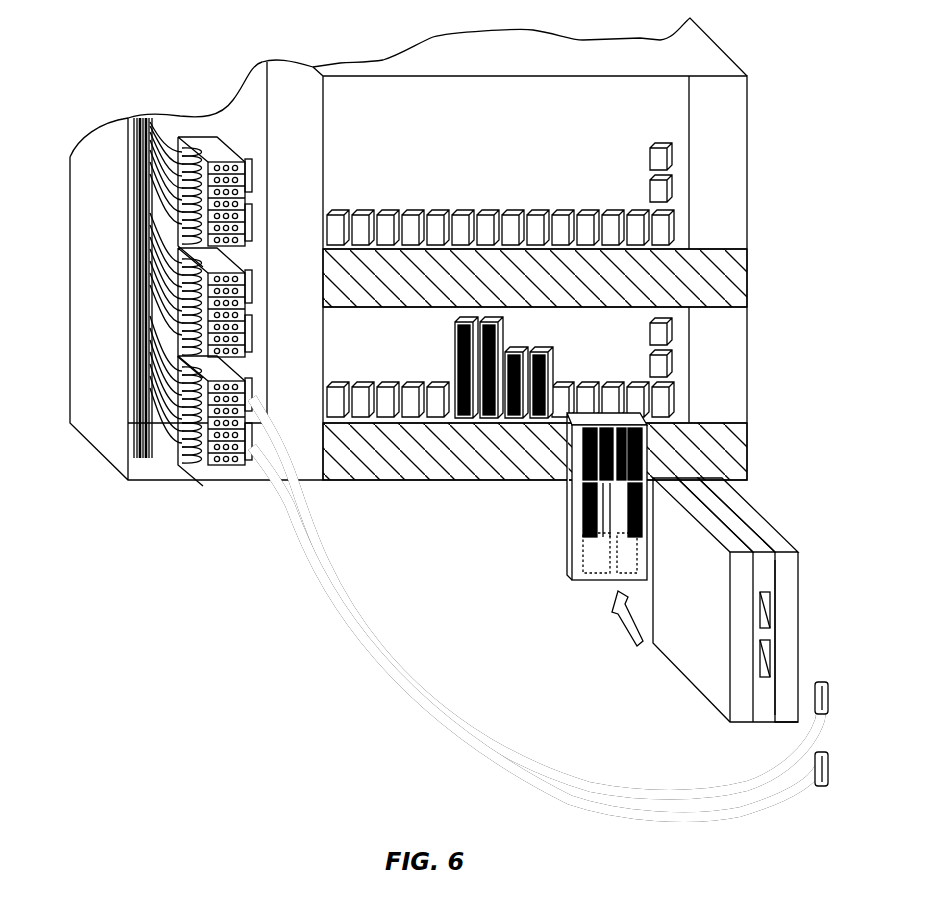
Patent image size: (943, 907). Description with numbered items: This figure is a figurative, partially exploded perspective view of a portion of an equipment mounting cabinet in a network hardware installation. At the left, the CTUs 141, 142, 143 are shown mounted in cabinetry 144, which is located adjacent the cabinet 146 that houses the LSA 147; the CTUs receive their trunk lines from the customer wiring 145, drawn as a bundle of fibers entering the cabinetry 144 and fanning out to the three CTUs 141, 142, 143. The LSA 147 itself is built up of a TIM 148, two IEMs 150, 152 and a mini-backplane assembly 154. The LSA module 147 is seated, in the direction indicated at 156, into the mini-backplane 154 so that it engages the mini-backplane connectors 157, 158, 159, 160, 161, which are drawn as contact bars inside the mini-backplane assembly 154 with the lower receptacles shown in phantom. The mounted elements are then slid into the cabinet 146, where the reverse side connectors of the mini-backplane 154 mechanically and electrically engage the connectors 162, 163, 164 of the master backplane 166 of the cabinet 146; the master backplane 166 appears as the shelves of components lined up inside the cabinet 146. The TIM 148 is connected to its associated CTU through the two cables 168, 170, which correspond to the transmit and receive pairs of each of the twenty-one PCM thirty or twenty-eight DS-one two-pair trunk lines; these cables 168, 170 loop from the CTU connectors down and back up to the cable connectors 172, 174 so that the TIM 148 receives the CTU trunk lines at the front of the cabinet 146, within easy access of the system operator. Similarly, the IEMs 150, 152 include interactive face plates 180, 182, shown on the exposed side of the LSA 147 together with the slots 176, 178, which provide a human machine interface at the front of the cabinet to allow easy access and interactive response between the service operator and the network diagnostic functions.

The CTU 141 is at (178, 198).
The CTU 142 is at (48, 183).
The CTU 143 is at (48, 183).
The cabinetry 144 is at (157, 478).
The customer wiring 145 is at (145, 120).
The cabinet 146 is at (726, 132).
The LSA 147 is at (763, 582).
The TIM 148 is at (736, 530).
The IEM 150 is at (710, 510).
The IEM 152 is at (762, 542).
The mini-backplane assembly 154 is at (573, 557).
The seating direction 156 is at (637, 628).
The mini-backplane connector 157 is at (585, 483).
The mini-backplane connector 158 is at (590, 501).
The mini-backplane connector 159 is at (590, 527).
The mini-backplane connector 160 is at (655, 511).
The mini-backplane connector 161 is at (632, 545).
The master backplane connector 162 is at (437, 382).
The master backplane connector 163 is at (423, 357).
The master backplane connector 164 is at (385, 373).
The master backplane 166 is at (508, 189).
The cable 168 is at (580, 790).
The cable 170 is at (686, 820).
The cable connector 172 is at (820, 684).
The cable connector 174 is at (820, 754).
The slot 176 is at (770, 600).
The slot 178 is at (770, 632).
The interactive face plate 180 is at (737, 616).
The interactive face plate 182 is at (796, 651).